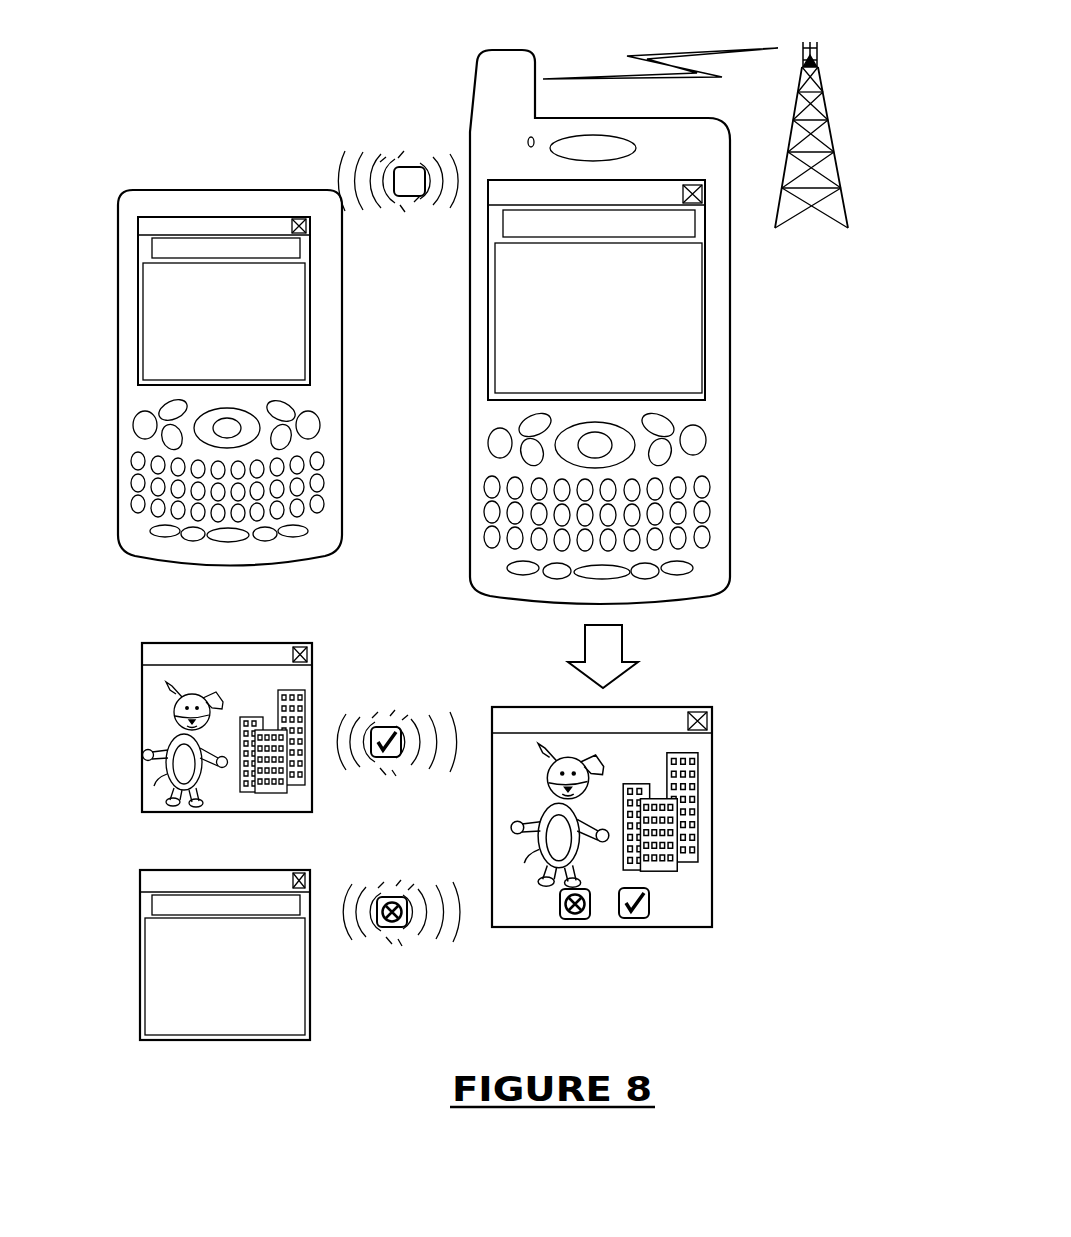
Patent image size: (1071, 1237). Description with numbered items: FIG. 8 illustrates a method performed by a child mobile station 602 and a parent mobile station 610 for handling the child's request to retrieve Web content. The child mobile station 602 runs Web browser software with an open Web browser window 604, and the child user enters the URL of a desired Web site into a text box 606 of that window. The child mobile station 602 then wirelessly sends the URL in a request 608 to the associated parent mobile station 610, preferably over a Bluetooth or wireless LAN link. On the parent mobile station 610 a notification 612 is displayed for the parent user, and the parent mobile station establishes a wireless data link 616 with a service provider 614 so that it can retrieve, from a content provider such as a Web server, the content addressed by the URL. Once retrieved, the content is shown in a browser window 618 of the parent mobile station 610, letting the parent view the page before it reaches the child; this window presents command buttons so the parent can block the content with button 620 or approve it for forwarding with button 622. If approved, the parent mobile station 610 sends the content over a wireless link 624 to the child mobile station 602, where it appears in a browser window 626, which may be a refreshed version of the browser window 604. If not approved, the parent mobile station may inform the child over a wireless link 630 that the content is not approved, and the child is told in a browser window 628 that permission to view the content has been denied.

The child mobile station 602 is at (163, 189).
The Web browser window 604 is at (222, 217).
The text box 606 is at (152, 245).
The request 608 is at (392, 150).
The parent mobile station 610 is at (470, 280).
The notification 612 is at (670, 332).
The service provider 614 is at (830, 151).
The wireless data link 616 is at (672, 53).
The browser window 618 is at (712, 782).
The button 620 is at (558, 910).
The button 622 is at (650, 912).
The wireless link 624 is at (395, 705).
The browser window 626 is at (142, 700).
The browser window 628 is at (140, 915).
The wireless link 630 is at (400, 950).